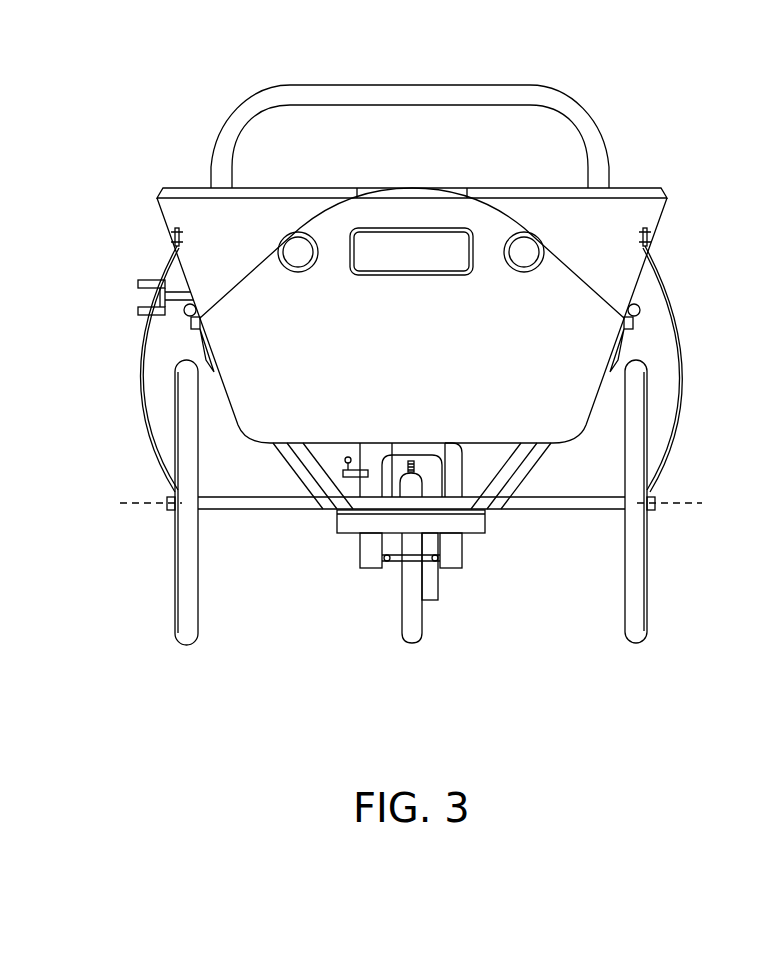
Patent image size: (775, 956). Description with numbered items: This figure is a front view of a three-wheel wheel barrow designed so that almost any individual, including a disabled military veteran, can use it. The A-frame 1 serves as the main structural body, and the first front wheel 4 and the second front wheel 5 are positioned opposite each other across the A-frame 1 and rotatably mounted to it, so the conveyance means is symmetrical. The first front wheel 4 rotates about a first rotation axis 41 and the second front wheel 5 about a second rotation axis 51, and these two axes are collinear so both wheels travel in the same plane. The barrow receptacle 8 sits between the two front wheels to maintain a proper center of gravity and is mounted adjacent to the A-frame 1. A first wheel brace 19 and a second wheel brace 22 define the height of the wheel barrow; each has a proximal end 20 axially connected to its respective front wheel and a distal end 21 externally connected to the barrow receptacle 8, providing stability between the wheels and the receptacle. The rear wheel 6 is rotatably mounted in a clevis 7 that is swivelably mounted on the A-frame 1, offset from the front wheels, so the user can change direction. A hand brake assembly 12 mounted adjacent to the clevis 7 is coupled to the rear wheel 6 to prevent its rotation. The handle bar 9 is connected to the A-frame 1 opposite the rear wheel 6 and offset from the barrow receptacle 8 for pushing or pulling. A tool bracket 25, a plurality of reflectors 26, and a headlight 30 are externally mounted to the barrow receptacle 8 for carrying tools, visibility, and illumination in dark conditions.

The A-frame 1 is at (290, 456).
The first front wheel 4 is at (646, 633).
The second front wheel 5 is at (172, 635).
The rear wheel 6 is at (413, 638).
The clevis 7 is at (360, 558).
The barrow receptacle 8 is at (362, 364).
The handle bar 9 is at (413, 92).
The hand brake assembly 12 is at (369, 444).
The first wheel brace 19 is at (683, 375).
The proximal end 20 is at (166, 496).
The distal end 21 is at (170, 237).
The second wheel brace 22 is at (143, 385).
The tool bracket 25 is at (138, 284).
The reflectors 26 is at (298, 272).
The headlight 30 is at (411, 262).
The first rotation axis 41 is at (702, 503).
The second rotation axis 51 is at (122, 503).